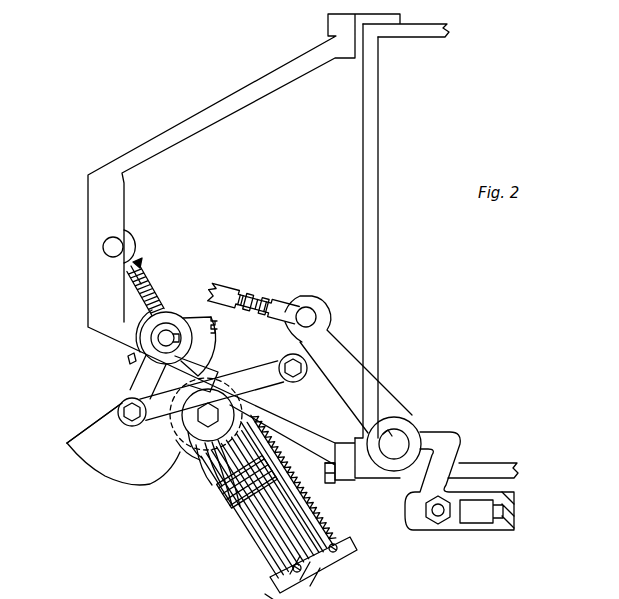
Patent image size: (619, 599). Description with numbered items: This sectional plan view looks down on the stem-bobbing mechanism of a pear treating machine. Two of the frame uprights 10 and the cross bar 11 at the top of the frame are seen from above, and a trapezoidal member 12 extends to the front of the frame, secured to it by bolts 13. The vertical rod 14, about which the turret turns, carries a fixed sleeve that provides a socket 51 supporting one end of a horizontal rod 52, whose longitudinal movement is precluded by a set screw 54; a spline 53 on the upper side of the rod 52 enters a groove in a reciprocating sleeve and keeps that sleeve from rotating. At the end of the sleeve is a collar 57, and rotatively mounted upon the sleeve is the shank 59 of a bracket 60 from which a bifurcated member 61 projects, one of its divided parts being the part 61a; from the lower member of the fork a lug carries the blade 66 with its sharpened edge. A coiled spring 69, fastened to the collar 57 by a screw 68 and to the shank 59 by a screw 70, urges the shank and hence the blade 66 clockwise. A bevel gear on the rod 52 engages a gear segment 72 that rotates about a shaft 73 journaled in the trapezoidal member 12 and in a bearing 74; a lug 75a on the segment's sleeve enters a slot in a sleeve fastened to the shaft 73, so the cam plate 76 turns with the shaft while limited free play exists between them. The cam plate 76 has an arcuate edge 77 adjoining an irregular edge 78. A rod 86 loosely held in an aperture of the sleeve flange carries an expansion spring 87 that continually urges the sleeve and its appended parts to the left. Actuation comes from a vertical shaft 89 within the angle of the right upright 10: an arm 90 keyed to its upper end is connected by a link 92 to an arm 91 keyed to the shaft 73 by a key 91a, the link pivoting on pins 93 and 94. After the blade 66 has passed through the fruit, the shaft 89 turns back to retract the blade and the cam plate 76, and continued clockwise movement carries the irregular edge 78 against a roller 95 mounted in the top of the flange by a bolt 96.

The uprights 10 is at (386, 481).
The cross bar 11 is at (365, 278).
The trapezoidal member 12 is at (118, 217).
The bolts 13 is at (338, 478).
The rod 14 is at (113, 247).
The socket 51 is at (141, 269).
The rod 52 is at (143, 287).
The spline 53 is at (284, 548).
The set screw 54 is at (302, 571).
The collar 57 is at (247, 490).
The shank 59 is at (210, 470).
The bracket 60 is at (190, 455).
The bifurcated member 61 is at (181, 463).
The divided part 61a is at (127, 365).
The blade 66 is at (66, 463).
The screw 68 is at (236, 510).
The coiled spring 69 is at (228, 500).
The screw 70 is at (222, 482).
The gear segment 72 is at (216, 326).
The shaft 73 is at (158, 338).
The bearing 74 is at (167, 318).
The lug 75a is at (230, 288).
The cam plate 76 is at (120, 420).
The arcuate edge 77 is at (224, 358).
The irregular edge 78 is at (140, 484).
The rod 86 is at (326, 535).
The expansion spring 87 is at (316, 516).
The vertical shaft 89 is at (398, 440).
The arm 90 is at (376, 404).
The arm 91 is at (148, 379).
The key 91a is at (215, 292).
The link 92 is at (275, 380).
The pin 93 is at (301, 378).
The pin 94 is at (125, 414).
The roller 95 is at (197, 466).
The bolt 96 is at (205, 470).